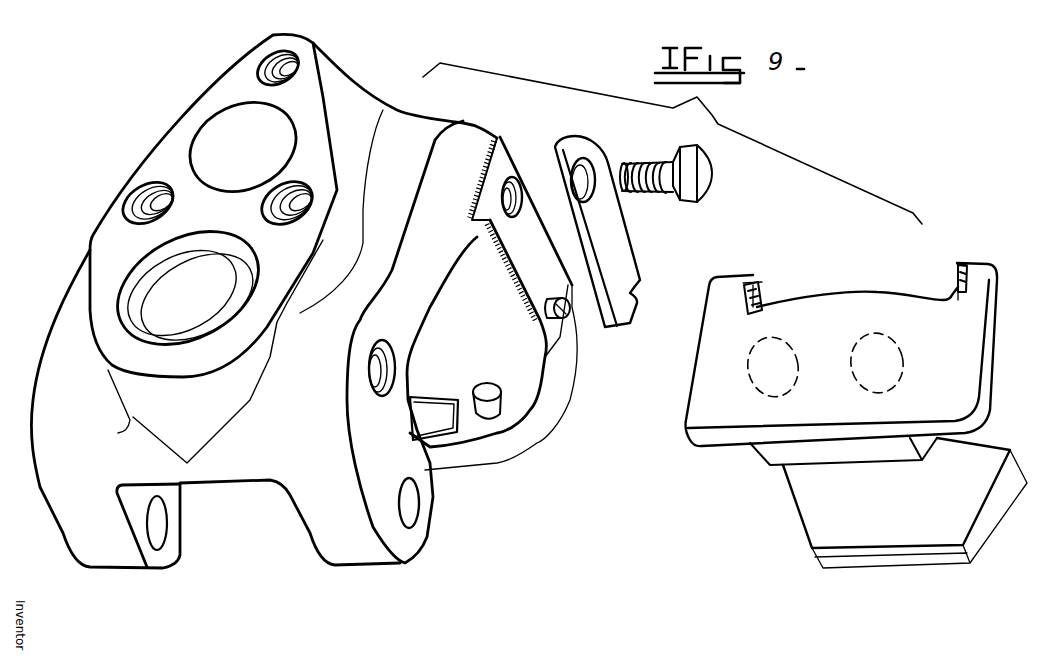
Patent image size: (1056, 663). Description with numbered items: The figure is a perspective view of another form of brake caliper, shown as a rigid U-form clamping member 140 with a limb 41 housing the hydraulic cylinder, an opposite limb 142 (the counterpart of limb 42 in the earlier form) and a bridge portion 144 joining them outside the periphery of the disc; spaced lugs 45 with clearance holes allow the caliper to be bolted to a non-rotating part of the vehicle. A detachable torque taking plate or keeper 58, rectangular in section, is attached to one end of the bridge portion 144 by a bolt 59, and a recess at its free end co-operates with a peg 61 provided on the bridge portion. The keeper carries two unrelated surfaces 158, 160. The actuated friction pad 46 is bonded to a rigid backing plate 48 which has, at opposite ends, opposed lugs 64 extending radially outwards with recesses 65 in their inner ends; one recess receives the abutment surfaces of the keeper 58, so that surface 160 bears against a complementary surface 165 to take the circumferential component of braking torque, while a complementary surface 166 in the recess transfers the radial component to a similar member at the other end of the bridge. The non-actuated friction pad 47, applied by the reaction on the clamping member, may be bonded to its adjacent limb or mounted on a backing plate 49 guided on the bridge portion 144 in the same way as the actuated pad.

The clamping member 140 is at (352, 97).
The limb 41 is at (376, 262).
The lugs 45 is at (92, 537).
The bridge portion 144 is at (530, 207).
The limb 142 is at (517, 440).
The backing plate 48 is at (500, 446).
The peg 61 is at (566, 314).
The torque taking plate or keeper 58 is at (605, 237).
The surface 160 is at (592, 215).
The surface 158 is at (597, 273).
The bolt 59 is at (657, 160).
The limb 42 is at (712, 385).
The lugs 64 is at (736, 282).
The recesses 65 is at (760, 297).
The complementary surface 165 is at (757, 293).
The complementary surface 166 is at (740, 307).
The friction pad 46 is at (780, 457).
The friction pad 47 is at (832, 525).
The backing plate 49 is at (827, 565).